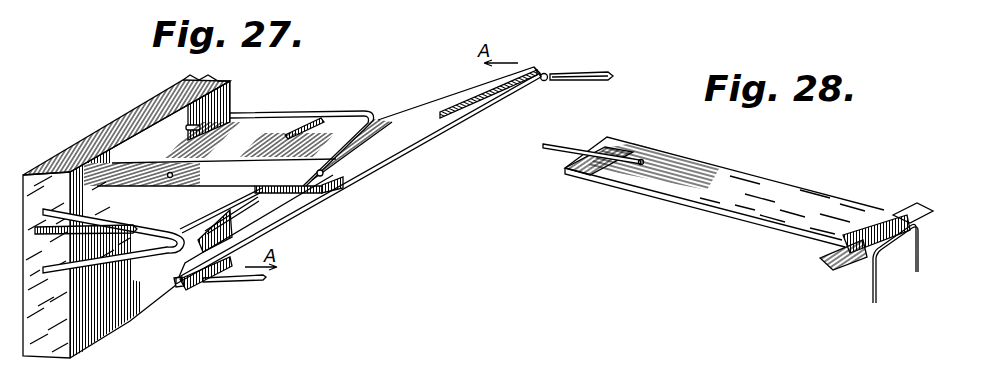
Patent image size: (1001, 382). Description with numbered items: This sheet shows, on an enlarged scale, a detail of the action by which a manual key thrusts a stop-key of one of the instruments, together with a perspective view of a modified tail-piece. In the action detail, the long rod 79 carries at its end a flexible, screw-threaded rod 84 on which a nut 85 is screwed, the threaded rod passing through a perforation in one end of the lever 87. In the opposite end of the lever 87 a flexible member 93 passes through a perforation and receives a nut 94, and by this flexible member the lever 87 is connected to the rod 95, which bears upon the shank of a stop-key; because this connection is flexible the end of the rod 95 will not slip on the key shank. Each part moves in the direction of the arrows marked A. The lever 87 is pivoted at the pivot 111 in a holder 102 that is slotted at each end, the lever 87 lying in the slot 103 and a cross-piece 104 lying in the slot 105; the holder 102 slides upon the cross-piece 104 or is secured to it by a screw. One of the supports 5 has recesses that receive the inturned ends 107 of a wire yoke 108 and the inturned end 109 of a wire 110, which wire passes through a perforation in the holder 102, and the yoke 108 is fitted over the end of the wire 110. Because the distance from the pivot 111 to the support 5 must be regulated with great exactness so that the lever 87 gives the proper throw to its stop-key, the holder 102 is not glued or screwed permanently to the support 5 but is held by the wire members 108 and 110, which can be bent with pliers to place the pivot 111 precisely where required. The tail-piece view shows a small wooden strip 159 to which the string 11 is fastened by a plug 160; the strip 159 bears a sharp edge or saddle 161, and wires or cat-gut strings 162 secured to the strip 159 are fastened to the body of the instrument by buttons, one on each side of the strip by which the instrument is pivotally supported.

In FIG. 27, the support 5 is at (163, 300).
In FIG. 28, the string 11 is at (560, 145).
In FIG. 27, the long rod 79 is at (575, 74).
In FIG. 27, the flexible screw-threaded rod 84 is at (547, 73).
In FIG. 27, the nut 85 is at (542, 72).
In FIG. 27, the lever 87 is at (358, 175).
In FIG. 27, the flexible member 93 is at (204, 281).
In FIG. 27, the nut 94 is at (193, 286).
In FIG. 27, the rod 95 is at (235, 289).
In FIG. 27, the holder 102 is at (220, 176).
In FIG. 27, the slot 103 is at (262, 194).
In FIG. 27, the cross-piece 104 is at (250, 137).
In FIG. 27, the slot 105 is at (205, 195).
In FIG. 27, the inturned ends 107 is at (45, 172).
In FIG. 27, the wire yoke 108 is at (160, 250).
In FIG. 27, the inturned end 109 is at (199, 118).
In FIG. 27, the wire 110 is at (372, 110).
In FIG. 27, the pivot 111 is at (340, 183).
In FIG. 28, the wooden strip 159 is at (749, 195).
In FIG. 28, the plug 160 is at (640, 166).
In FIG. 28, the saddle 161 is at (583, 175).
In FIG. 28, the strings 162 is at (877, 288).